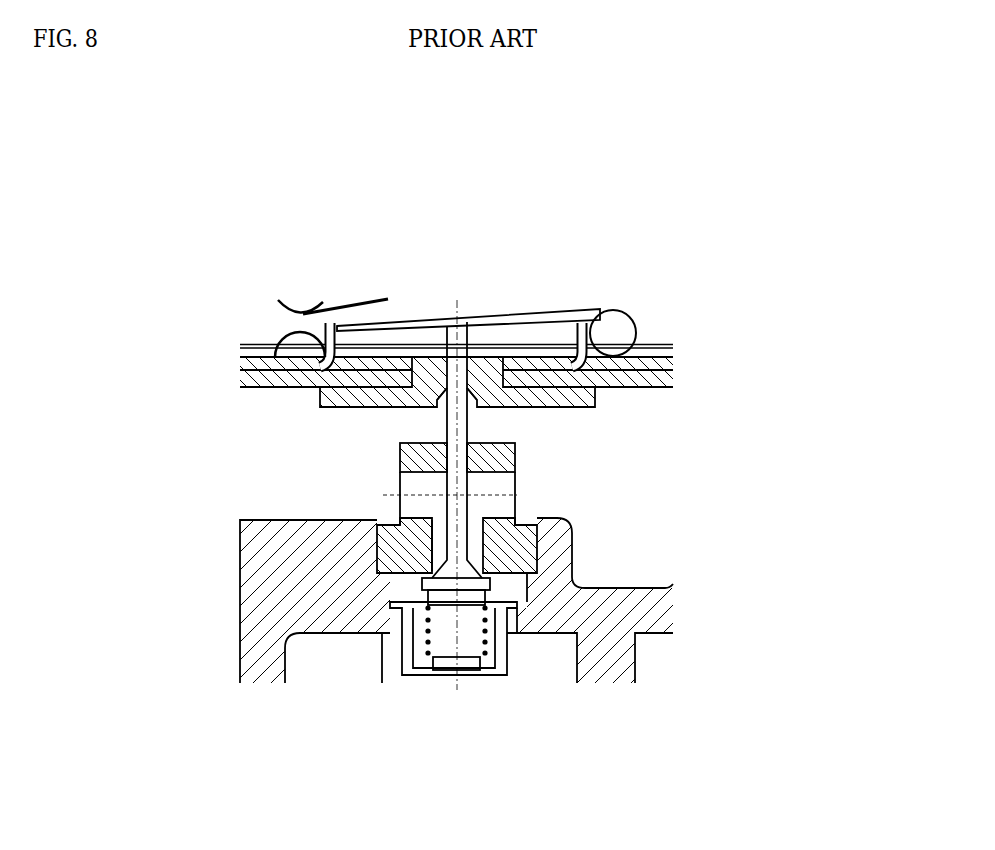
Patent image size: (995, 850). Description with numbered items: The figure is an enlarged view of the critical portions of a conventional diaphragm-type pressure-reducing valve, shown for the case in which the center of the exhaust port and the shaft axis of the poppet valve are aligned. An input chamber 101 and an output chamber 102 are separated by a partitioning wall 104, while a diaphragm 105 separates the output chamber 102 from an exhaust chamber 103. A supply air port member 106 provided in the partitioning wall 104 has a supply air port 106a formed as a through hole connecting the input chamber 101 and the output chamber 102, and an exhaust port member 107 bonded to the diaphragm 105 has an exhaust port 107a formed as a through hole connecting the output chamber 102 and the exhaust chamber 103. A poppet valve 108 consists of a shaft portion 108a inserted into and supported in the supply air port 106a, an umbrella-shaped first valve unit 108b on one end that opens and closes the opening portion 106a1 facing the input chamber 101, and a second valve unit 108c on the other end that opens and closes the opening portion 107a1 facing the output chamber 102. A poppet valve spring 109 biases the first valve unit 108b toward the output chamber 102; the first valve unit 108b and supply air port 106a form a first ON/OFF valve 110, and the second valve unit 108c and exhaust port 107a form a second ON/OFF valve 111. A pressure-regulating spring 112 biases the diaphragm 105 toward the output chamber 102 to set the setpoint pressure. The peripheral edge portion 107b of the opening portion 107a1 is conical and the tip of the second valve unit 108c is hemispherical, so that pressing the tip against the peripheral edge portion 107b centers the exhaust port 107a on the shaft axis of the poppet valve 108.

The input chamber 101 is at (538, 668).
The output chamber 102 is at (330, 483).
The exhaust chamber 103 is at (505, 308).
The partitioning wall 104 is at (287, 610).
The diaphragm 105 is at (292, 336).
The supply air port member 106 is at (383, 518).
The supply air port 106a is at (482, 533).
The opening portion 106a1 is at (425, 555).
The exhaust port member 107 is at (318, 408).
The exhaust port 107a is at (597, 393).
The opening portion 107a1 is at (440, 347).
The peripheral edge portion 107b is at (355, 348).
The poppet valve 108 is at (470, 507).
The shaft portion 108a is at (400, 463).
The first valve unit 108b is at (490, 580).
The second valve unit 108c is at (465, 403).
The poppet valve spring 109 is at (420, 652).
The first ON/OFF valve 110 is at (773, 497).
The second ON/OFF valve 111 is at (783, 388).
The pressure-regulating spring 112 is at (618, 330).